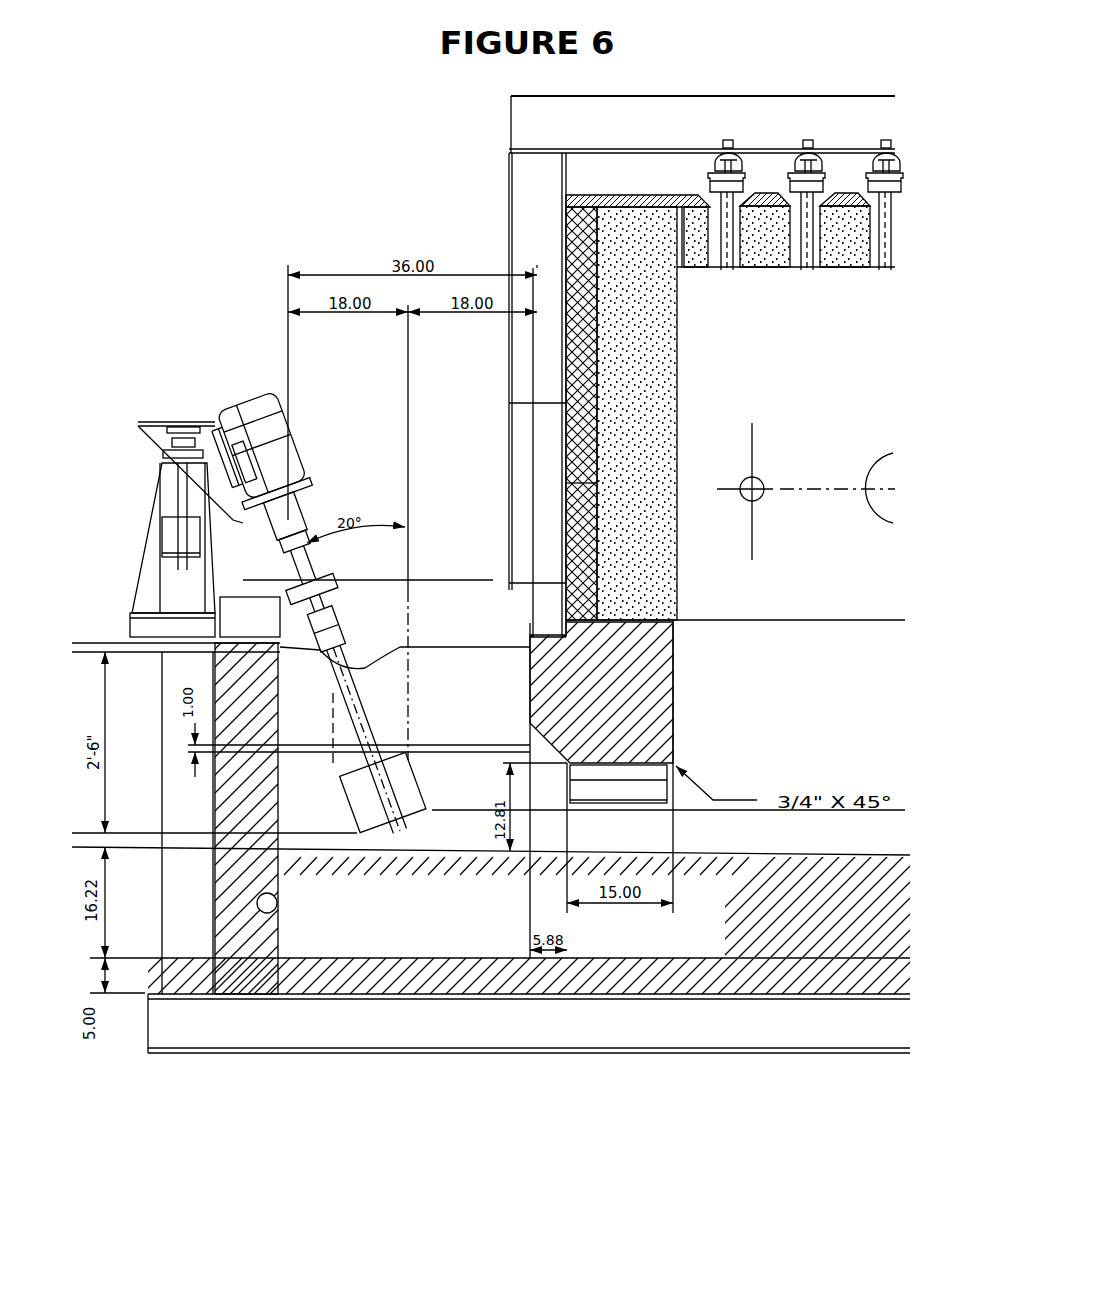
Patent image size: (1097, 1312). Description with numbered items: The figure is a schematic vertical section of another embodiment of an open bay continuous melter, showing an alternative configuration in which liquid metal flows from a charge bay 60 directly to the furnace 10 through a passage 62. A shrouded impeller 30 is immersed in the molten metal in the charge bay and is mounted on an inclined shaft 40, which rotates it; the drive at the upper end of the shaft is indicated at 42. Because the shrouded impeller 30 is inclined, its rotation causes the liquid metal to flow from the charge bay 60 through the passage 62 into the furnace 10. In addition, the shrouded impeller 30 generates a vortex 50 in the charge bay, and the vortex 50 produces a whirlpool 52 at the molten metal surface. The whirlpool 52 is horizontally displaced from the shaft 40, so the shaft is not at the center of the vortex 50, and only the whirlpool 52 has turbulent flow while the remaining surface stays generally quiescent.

The furnace 10 is at (853, 390).
The shrouded impeller 30 is at (368, 798).
The shaft 40 is at (350, 657).
The motor 42 is at (283, 427).
The vortex 50 is at (390, 712).
The whirlpool 52 is at (383, 645).
The charge bay 60 is at (480, 795).
The passage 62 is at (655, 846).